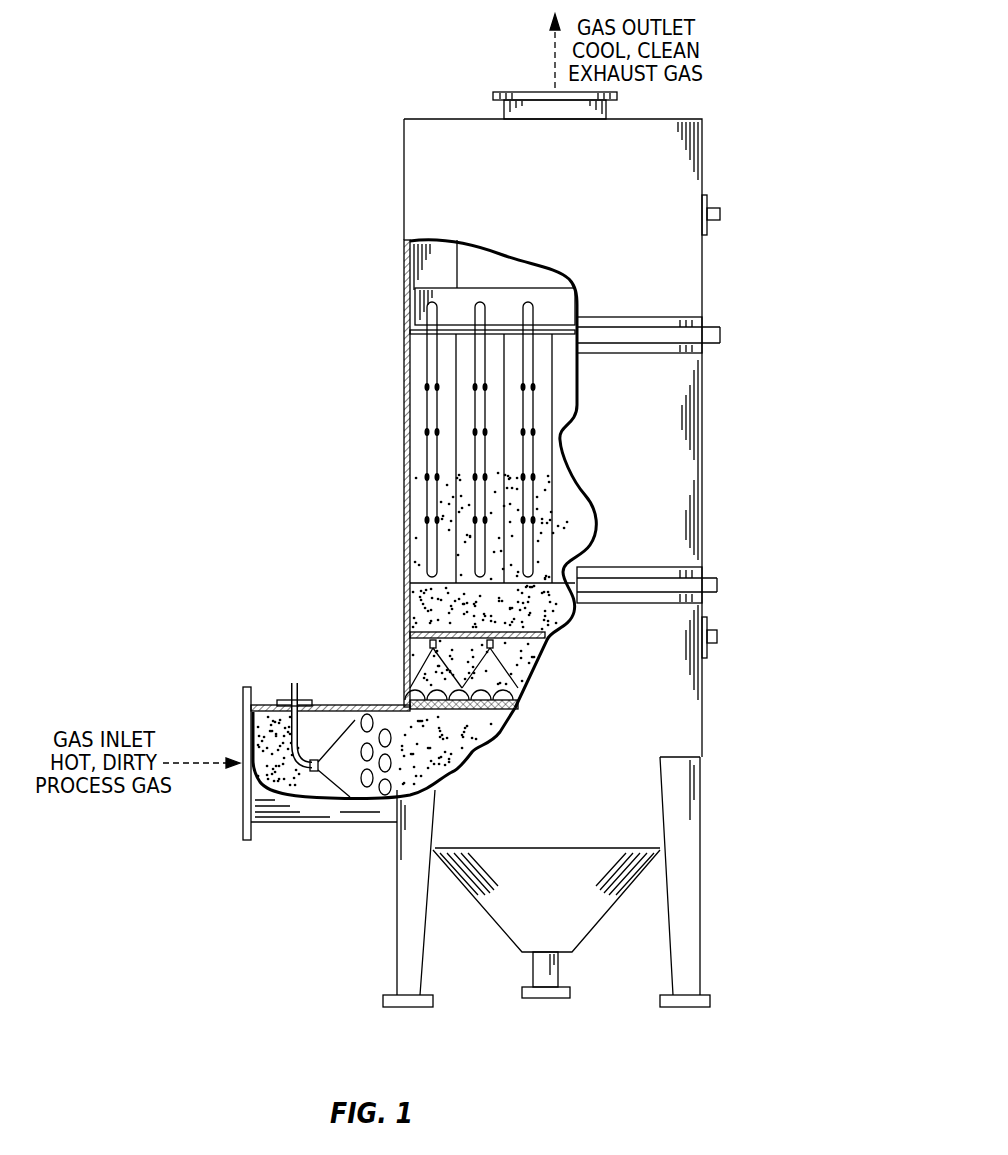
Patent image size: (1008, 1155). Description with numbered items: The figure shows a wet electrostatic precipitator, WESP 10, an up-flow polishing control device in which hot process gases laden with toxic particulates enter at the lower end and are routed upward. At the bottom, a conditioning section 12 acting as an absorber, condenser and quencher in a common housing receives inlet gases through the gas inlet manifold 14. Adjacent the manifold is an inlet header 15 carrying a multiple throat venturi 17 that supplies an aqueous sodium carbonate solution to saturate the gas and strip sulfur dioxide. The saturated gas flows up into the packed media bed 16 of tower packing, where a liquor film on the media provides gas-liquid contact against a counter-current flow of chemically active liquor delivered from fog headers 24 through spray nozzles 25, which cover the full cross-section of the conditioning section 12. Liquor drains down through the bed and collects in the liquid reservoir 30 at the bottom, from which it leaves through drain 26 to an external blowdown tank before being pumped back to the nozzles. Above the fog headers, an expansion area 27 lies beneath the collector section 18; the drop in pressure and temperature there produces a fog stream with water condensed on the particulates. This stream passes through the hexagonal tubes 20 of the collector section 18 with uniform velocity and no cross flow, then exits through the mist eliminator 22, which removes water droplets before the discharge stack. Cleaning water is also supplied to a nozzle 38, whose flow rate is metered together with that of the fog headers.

The wet electrostatic precipitator 10 is at (258, 42).
The conditioning section 12 is at (686, 713).
The gas inlet manifold 14 is at (243, 822).
The inlet header 15 is at (295, 683).
The packed media bed 16 is at (508, 703).
The multiple throat venturi 17 is at (307, 780).
The collector section 18 is at (686, 458).
The hexagonal tube 20 is at (426, 406).
The mist eliminator 22 is at (504, 114).
The fog header 24 is at (712, 645).
The spray nozzle 25 is at (432, 644).
The drain 26 is at (546, 998).
The expansion area 27 is at (553, 615).
The liquid reservoir 30 is at (475, 918).
The nozzle 38 is at (715, 222).